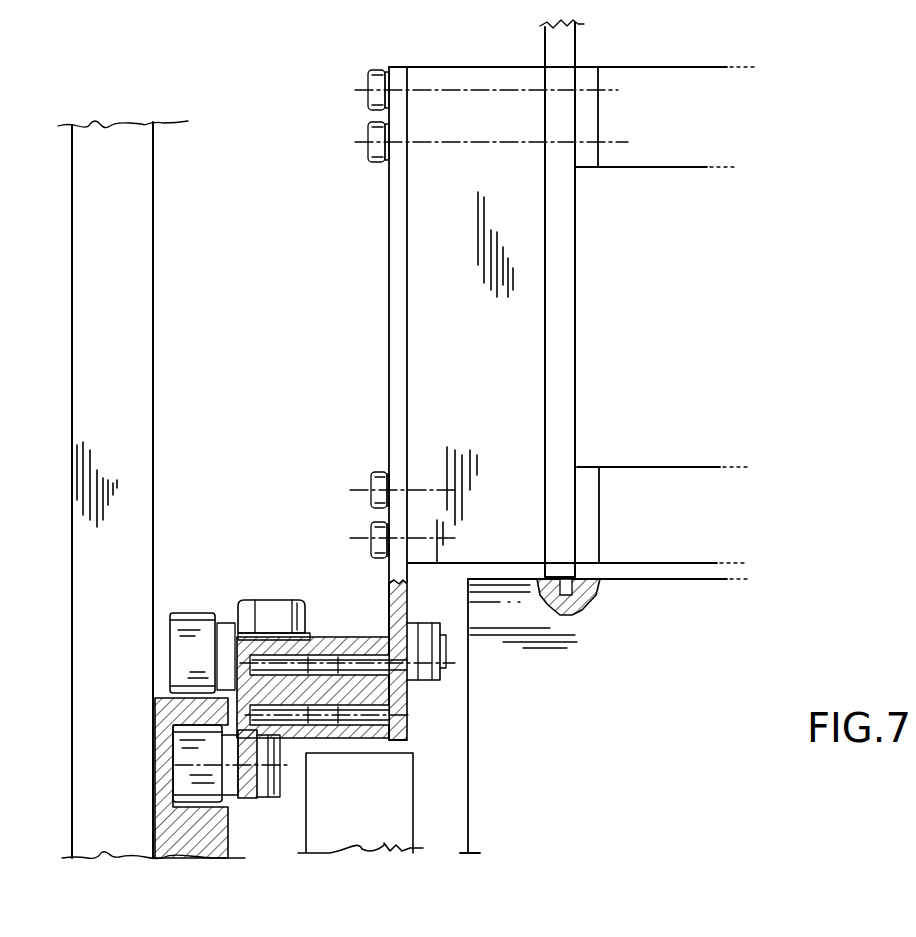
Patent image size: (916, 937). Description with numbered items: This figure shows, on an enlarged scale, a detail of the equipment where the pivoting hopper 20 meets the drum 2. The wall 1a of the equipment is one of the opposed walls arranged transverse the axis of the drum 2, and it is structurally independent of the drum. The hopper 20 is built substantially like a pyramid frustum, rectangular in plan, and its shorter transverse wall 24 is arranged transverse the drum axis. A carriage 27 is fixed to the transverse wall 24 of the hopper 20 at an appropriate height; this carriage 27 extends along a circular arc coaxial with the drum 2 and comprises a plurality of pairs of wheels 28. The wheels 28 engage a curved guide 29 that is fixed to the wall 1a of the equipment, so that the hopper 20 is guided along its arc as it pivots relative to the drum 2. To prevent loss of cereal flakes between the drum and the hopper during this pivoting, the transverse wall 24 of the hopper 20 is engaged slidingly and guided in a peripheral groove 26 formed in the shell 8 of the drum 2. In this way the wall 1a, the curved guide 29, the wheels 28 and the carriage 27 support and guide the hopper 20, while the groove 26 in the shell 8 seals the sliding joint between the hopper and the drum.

The wall 1a is at (152, 335).
The drum 2 is at (618, 719).
The shell 8 is at (680, 580).
The hopper 20 is at (543, 52).
The transverse wall 24 is at (563, 257).
The peripheral groove 26 is at (590, 606).
The carriage 27 is at (395, 572).
The wheel 28 is at (200, 622).
The curved guide 29 is at (190, 712).